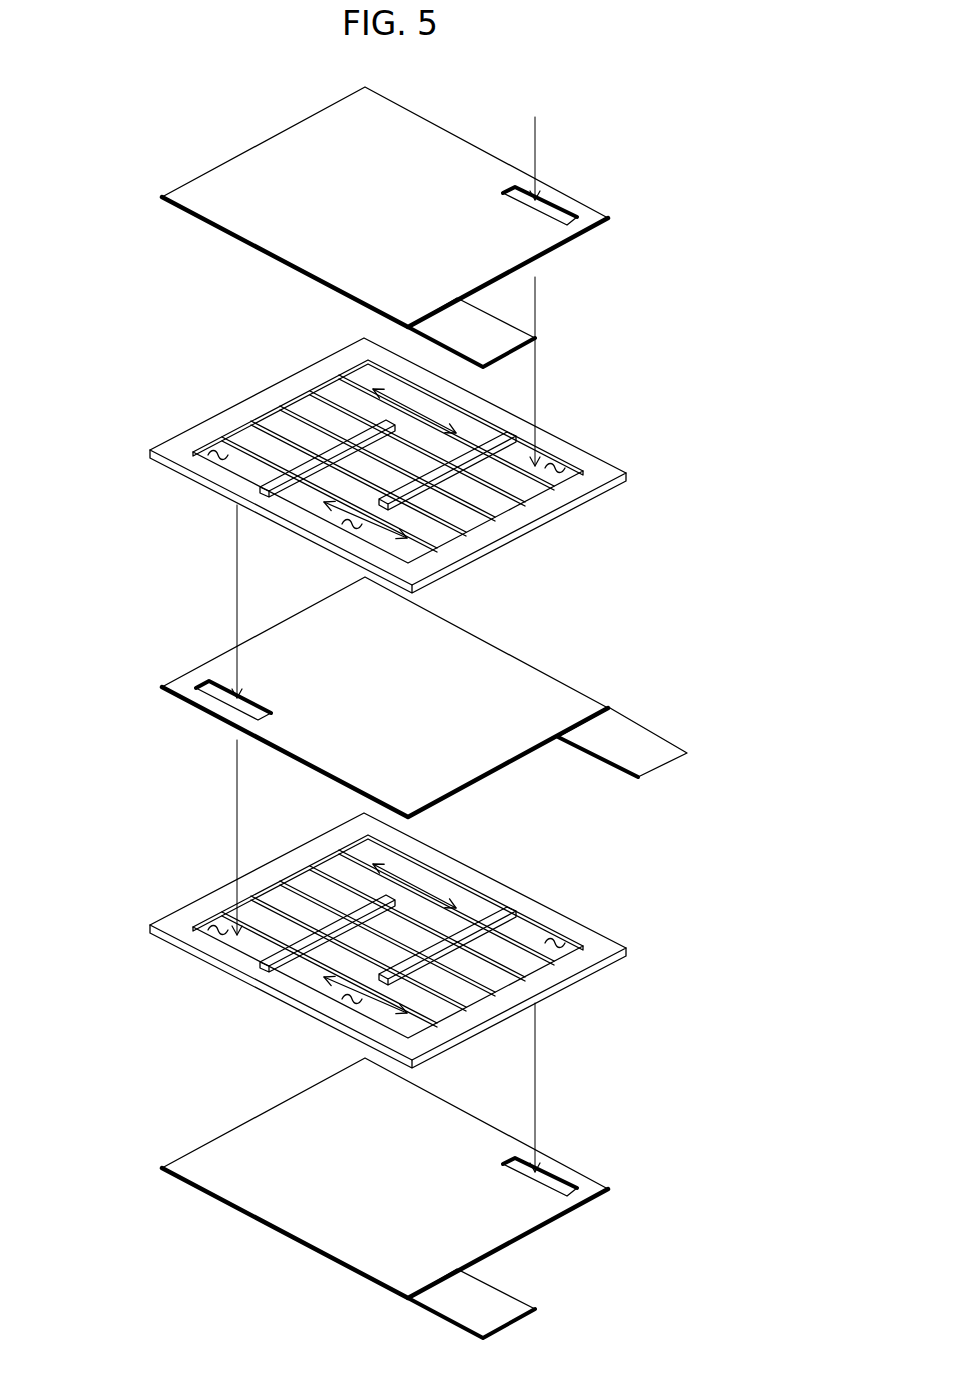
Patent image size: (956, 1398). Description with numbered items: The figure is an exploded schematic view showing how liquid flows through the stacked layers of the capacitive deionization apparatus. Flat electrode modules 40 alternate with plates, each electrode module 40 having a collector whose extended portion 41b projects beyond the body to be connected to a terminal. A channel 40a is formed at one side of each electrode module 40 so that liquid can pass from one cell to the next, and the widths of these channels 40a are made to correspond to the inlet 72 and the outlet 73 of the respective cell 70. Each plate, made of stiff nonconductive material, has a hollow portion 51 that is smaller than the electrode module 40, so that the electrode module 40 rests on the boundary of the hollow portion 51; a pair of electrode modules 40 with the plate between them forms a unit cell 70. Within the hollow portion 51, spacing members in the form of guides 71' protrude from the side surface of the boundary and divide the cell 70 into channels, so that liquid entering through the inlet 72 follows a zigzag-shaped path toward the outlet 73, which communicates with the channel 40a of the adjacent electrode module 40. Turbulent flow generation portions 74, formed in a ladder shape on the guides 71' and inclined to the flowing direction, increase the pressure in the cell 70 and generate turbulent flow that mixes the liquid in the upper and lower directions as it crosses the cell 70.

The electrode module 40 is at (163, 193).
The channel 40a is at (553, 208).
The extended portion 41b is at (650, 740).
The unit cell 70 is at (353, 527).
The guide 71' is at (388, 646).
The hollow portion 51 is at (283, 417).
The inlet 72 is at (573, 463).
The outlet 73 is at (220, 445).
The turbulent flow generation portion 74 is at (330, 480).